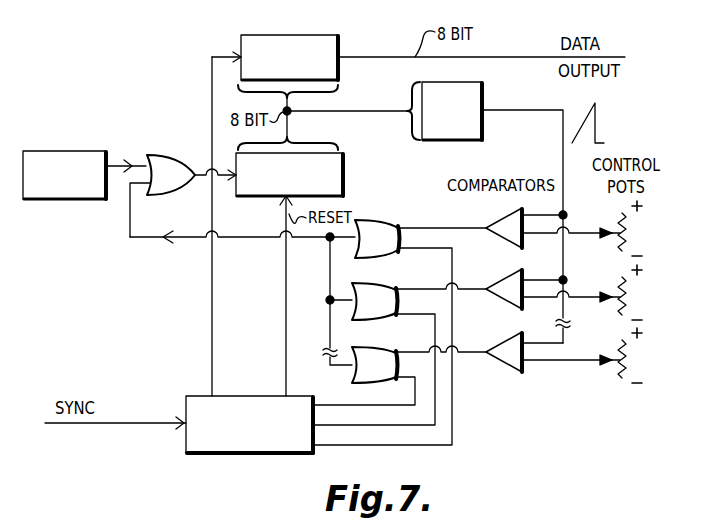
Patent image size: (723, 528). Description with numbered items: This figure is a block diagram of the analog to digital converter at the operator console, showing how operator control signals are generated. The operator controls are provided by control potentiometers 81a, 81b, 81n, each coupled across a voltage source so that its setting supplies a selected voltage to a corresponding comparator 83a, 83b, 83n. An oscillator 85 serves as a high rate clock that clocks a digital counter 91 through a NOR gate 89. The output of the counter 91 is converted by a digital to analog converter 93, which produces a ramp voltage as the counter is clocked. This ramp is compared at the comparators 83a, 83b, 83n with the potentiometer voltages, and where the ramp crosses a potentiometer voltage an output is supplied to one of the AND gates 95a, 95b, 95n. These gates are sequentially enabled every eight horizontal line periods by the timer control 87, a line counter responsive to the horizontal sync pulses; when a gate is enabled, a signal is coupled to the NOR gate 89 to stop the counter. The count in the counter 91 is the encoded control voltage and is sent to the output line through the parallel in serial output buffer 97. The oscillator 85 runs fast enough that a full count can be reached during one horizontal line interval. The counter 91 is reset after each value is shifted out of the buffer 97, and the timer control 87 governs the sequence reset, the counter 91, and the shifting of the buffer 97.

The oscillator 85 is at (81, 151).
The NOR gate 89 is at (182, 155).
The parallel in serial output buffer 97 is at (240, 37).
The digital counter 91 is at (346, 177).
The digital to analog converter 93 is at (484, 139).
The AND gate 95a is at (397, 223).
The AND gate 95b is at (373, 283).
The AND gate 95n is at (373, 347).
The comparator 83a is at (513, 248).
The comparator 83b is at (513, 310).
The comparator 83n is at (513, 373).
The control potentiometer 81a is at (626, 232).
The control potentiometer 81b is at (626, 296).
The control potentiometer 81n is at (626, 359).
The timer control 87 is at (253, 396).